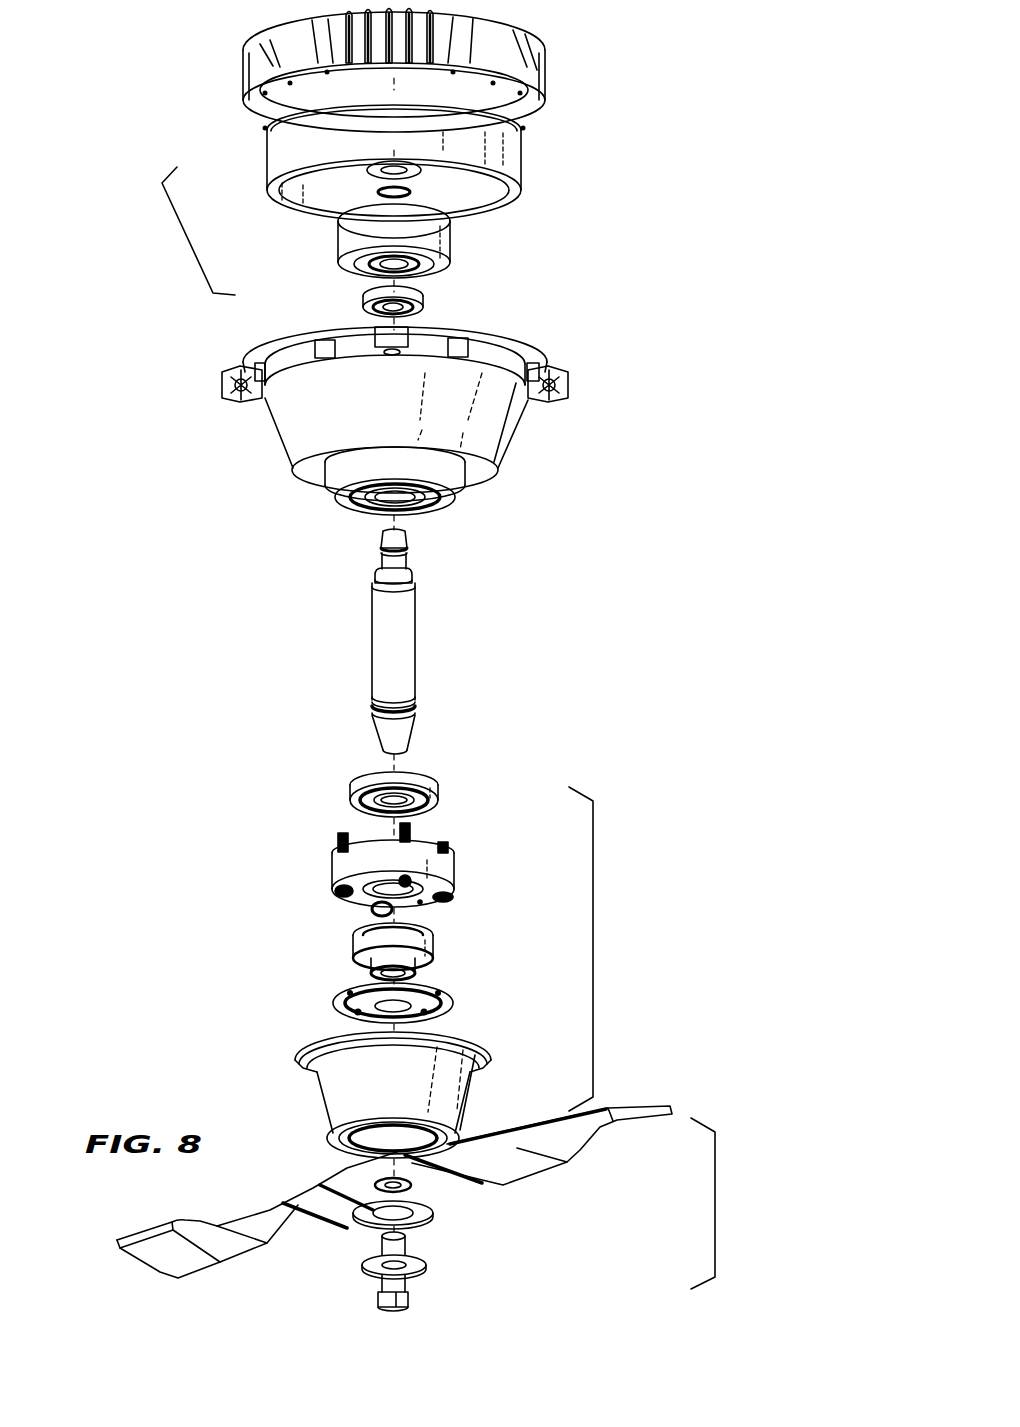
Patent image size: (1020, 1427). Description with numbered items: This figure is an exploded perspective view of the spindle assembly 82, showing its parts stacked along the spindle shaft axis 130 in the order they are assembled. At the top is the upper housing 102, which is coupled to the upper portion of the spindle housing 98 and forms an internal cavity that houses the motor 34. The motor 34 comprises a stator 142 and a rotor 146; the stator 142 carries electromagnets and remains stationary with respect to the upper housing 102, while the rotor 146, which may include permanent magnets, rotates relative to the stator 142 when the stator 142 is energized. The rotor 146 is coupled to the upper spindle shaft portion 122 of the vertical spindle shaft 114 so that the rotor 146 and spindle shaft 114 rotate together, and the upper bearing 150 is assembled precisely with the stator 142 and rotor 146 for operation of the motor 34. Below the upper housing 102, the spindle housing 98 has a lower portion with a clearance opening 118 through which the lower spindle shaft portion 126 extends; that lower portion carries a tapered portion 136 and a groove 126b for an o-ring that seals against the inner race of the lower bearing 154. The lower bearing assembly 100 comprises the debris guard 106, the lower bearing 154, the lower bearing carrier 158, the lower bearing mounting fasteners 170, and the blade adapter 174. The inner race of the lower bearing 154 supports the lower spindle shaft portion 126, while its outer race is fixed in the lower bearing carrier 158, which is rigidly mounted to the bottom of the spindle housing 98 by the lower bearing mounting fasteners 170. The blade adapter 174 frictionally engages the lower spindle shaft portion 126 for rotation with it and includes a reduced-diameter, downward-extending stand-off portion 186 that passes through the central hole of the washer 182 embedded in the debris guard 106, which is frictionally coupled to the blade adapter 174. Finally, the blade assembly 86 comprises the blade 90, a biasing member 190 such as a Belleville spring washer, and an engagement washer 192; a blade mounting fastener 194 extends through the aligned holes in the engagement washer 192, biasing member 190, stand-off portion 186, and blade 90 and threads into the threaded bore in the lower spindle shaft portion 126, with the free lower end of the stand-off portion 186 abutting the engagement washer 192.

The motor 34 is at (190, 242).
The spindle assembly 82 is at (214, 560).
The blade assembly 86 is at (715, 1198).
The blade 90 is at (520, 1168).
The spindle housing 98 is at (517, 442).
The lower bearing assembly 100 is at (593, 944).
The upper housing 102 is at (497, 58).
The debris guard 106 is at (318, 1102).
The vertical spindle shaft 114 is at (399, 648).
The clearance opening 118 is at (375, 507).
The upper spindle shaft portion 122 is at (380, 580).
The lower spindle shaft portion 126 is at (372, 708).
The groove 126b is at (413, 713).
The spindle shaft axis 130 is at (405, 762).
The tapered portion 136 is at (413, 738).
The stator 142 is at (333, 228).
The rotor 146 is at (277, 163).
The upper bearing 150 is at (436, 297).
The lower bearing 154 is at (353, 787).
The lower bearing carrier 158 is at (327, 866).
The lower bearing mounting fasteners 170 is at (337, 897).
The blade adapter 174 is at (329, 948).
The washer 182 is at (453, 1008).
The stand-off portion 186 is at (367, 950).
The biasing member 190 is at (368, 1200).
The engagement washer 192 is at (426, 1263).
The blade mounting fastener 194 is at (380, 1298).